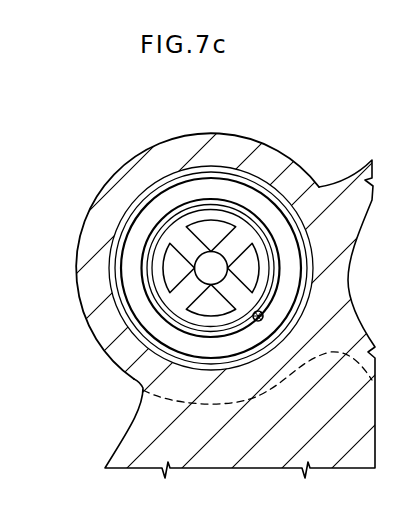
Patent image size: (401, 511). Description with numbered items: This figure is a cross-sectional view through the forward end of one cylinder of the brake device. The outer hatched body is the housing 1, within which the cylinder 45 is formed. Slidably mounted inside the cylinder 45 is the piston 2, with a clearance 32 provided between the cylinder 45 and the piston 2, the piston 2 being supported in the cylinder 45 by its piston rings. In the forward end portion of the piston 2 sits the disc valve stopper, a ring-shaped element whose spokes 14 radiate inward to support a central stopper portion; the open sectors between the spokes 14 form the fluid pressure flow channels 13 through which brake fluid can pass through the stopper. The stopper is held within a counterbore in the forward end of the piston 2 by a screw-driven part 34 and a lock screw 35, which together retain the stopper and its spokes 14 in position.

The housing 1 is at (123, 182).
The piston 2 is at (225, 190).
The fluid pressure flow channels 13 is at (207, 227).
The spokes 14 is at (182, 297).
The clearance 32 is at (260, 180).
The screw-driven part 34 is at (274, 281).
The lock screw 35 is at (263, 314).
The cylinder 45 is at (118, 225).